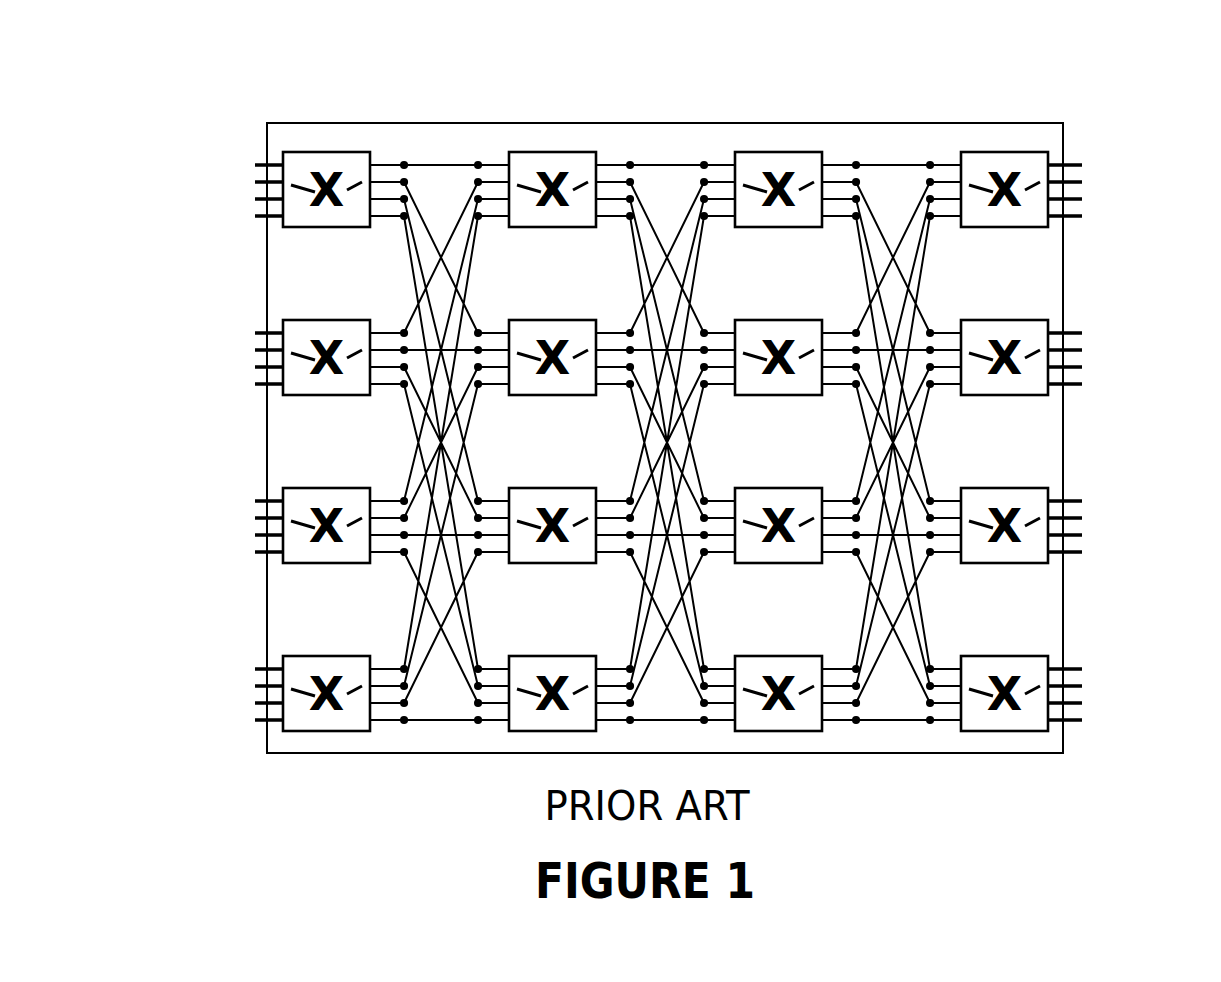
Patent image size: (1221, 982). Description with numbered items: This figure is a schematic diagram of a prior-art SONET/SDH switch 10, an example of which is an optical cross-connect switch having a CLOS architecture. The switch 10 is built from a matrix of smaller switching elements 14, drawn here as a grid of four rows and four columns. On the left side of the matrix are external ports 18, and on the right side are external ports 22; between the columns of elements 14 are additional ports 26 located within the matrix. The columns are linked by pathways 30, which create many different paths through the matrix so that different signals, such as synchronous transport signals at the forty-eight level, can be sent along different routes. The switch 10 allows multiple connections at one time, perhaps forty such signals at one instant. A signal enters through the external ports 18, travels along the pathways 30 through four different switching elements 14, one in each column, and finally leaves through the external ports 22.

The SONET/SDH switch 10 is at (692, 100).
The switching element 14 is at (552, 148).
The external ports 18 is at (255, 669).
The external ports 22 is at (1082, 165).
The additional ports 26 is at (832, 163).
The pathways 30 is at (404, 350).